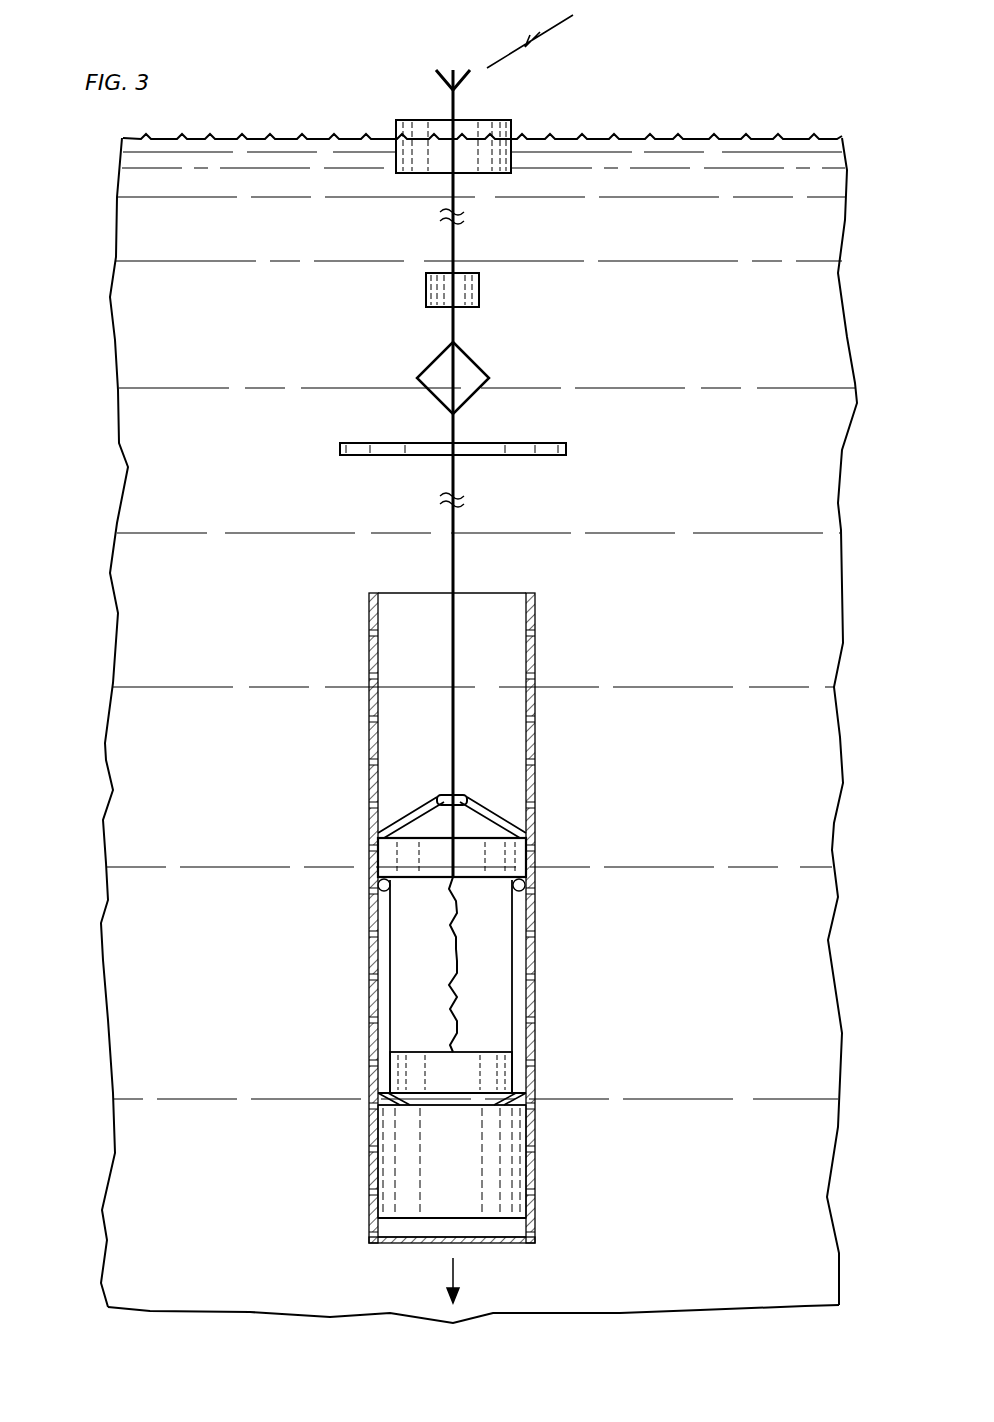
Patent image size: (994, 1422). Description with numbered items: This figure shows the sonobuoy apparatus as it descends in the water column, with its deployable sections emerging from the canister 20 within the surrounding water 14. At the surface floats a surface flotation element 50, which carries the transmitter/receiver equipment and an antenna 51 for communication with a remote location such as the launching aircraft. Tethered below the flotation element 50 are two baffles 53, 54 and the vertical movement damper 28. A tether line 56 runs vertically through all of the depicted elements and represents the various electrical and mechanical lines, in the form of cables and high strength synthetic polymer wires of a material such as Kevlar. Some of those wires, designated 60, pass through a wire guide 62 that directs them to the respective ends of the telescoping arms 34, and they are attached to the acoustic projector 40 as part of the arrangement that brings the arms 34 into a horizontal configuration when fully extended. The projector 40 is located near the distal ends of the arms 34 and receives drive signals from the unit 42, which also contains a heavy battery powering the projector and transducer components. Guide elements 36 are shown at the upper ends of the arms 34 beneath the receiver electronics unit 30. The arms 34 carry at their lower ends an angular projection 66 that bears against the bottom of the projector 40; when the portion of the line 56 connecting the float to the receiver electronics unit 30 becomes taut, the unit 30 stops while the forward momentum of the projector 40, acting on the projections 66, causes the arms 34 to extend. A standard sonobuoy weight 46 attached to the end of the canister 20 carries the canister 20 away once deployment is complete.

The earth formation 14 is at (713, 160).
The surface flotation element 50 is at (511, 125).
The antenna 51 is at (440, 80).
The tether line 56 is at (450, 242).
The baffle 53 is at (480, 298).
The baffle 54 is at (472, 392).
The vertical movement damper 28 is at (548, 455).
The canister 20 is at (534, 702).
The wire guide 62 is at (455, 793).
The high strength synthetic polymer wires 60 is at (420, 824).
The receiver electronics unit 30 is at (510, 857).
The rollers 36 is at (522, 889).
The telescoping arms 34 is at (372, 958).
The acoustic projector 40 is at (500, 1077).
The angular projection 66 is at (530, 1100).
The drive signal unit 42 is at (508, 1152).
The sonobuoy weight 46 is at (508, 1228).